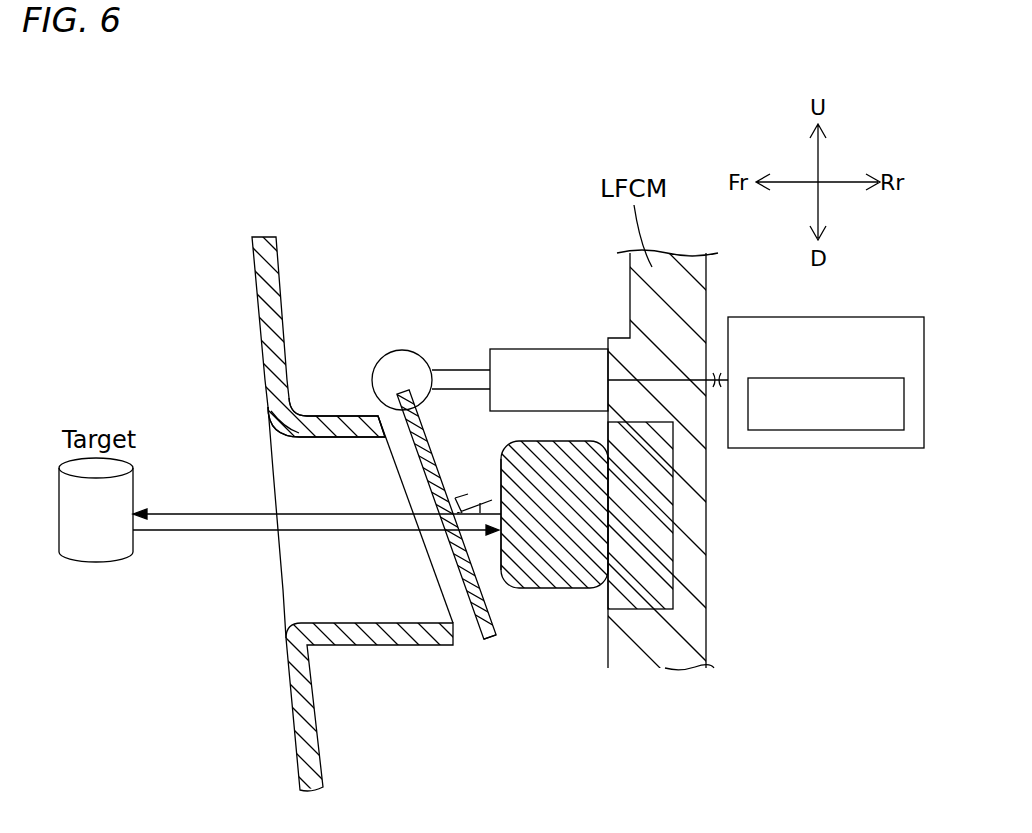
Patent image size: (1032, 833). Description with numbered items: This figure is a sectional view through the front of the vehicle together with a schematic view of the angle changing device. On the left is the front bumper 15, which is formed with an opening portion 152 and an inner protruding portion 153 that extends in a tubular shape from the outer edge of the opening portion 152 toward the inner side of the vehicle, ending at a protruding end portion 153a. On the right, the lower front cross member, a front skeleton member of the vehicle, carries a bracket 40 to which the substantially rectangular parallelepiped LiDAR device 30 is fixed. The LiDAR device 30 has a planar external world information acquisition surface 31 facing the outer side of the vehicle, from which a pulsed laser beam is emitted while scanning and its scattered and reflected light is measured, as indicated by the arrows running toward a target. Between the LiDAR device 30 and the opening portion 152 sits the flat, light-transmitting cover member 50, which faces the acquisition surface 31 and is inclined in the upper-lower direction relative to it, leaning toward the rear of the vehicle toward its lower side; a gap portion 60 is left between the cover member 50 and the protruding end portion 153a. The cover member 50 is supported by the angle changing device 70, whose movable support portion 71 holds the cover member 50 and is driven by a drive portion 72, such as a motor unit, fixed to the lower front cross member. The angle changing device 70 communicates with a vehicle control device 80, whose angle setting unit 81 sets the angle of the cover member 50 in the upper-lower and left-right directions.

The front bumper 15 is at (342, 513).
The opening portion 152 is at (271, 453).
The inner protruding portion 153 is at (340, 623).
The protruding end portion 153a is at (447, 600).
The LiDAR device 30 is at (530, 533).
The external world information acquisition surface 31 is at (498, 480).
The bracket 40 is at (639, 572).
The cover member 50 is at (498, 637).
The gap portion 60 is at (445, 542).
The angle changing device 70 is at (490, 325).
The movable support portion 71 is at (403, 367).
The drive portion 72 is at (549, 348).
The vehicle control device 80 is at (826, 380).
The angle setting unit 81 is at (825, 431).